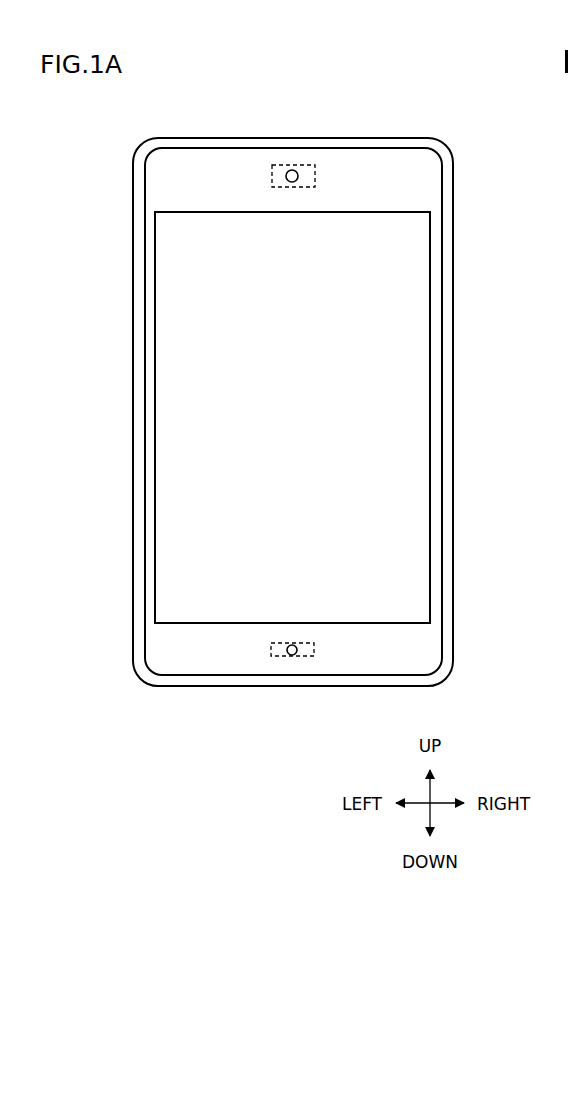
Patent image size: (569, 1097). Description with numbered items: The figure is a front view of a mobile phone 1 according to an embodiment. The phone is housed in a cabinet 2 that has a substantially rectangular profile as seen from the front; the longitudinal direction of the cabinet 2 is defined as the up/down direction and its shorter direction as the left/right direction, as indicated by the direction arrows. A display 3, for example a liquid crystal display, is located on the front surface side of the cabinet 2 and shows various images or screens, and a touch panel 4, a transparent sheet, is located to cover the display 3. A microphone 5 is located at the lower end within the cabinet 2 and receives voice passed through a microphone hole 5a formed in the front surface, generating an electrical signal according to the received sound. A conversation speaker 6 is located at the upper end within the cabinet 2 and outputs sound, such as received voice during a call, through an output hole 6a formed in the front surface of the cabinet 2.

The mobile phone 1 is at (307, 408).
The cabinet 2 is at (453, 235).
The display 3 is at (290, 417).
The touch panel 4 is at (418, 497).
The microphone 5 is at (286, 698).
The microphone hole 5a is at (296, 657).
The conversation speaker 6 is at (308, 129).
The output hole 6a is at (291, 165).